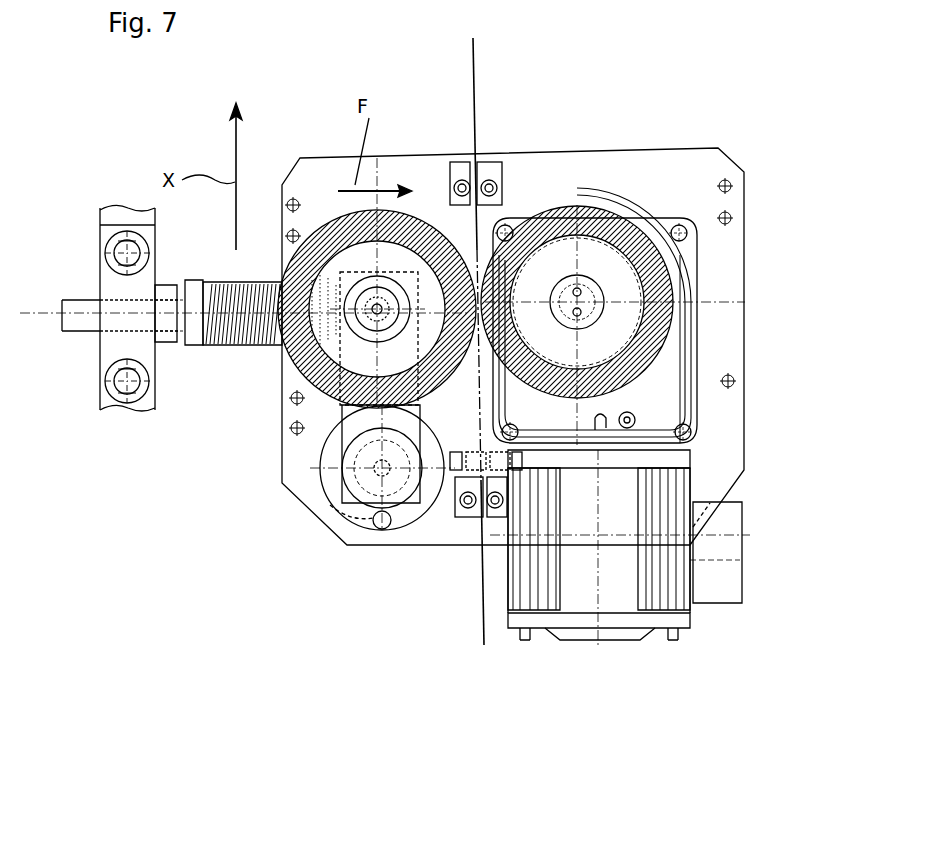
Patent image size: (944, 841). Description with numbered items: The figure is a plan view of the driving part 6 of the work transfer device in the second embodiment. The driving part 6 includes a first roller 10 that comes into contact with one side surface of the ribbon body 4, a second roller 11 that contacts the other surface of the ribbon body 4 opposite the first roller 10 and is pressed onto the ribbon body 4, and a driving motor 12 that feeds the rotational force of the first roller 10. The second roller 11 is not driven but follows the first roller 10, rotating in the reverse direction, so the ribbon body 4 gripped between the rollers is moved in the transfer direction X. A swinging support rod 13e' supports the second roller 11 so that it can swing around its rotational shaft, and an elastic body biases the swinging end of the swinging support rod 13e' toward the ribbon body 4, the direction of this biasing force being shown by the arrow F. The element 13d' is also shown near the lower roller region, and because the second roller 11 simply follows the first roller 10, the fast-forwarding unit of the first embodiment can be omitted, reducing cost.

The ribbon body 4 is at (478, 92).
The driving part 6 is at (750, 122).
The first roller 10 is at (607, 205).
The second roller 11 is at (268, 248).
The driving motor 12 is at (635, 612).
The tension roller 13d' is at (334, 472).
The swinging support rod 13e' is at (236, 366).